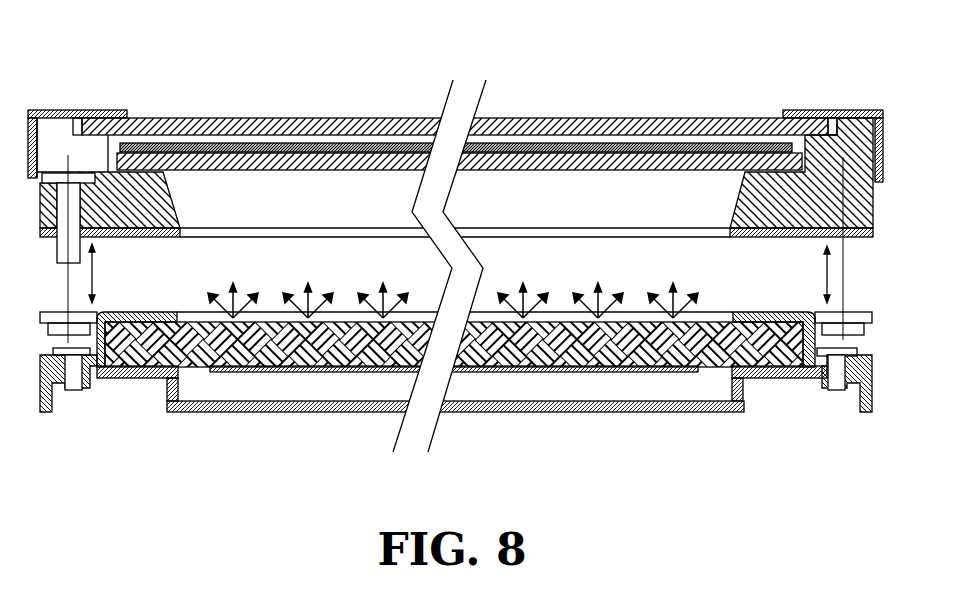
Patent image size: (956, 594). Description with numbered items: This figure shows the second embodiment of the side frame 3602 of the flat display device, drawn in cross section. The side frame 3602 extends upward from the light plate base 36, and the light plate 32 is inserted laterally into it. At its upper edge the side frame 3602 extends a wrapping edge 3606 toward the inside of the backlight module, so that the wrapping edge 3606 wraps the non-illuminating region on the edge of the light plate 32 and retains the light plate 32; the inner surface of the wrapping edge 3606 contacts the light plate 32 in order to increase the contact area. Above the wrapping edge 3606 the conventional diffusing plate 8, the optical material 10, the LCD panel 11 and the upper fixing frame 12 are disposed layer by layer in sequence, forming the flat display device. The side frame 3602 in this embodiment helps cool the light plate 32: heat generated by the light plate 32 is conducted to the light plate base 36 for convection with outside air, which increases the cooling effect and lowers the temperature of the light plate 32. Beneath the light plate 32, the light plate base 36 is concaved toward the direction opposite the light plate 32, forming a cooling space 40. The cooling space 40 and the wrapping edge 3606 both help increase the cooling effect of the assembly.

The diffusing plate 8 is at (373, 155).
The optical material 10 is at (284, 143).
The LCD panel 11 is at (197, 118).
The upper fixing frame 12 is at (110, 110).
The light plate 32 is at (517, 350).
The light plate base 36 is at (575, 425).
The cooling space 40 is at (256, 392).
The side frame 3602 is at (95, 372).
The wrapping edge 3606 is at (148, 312).